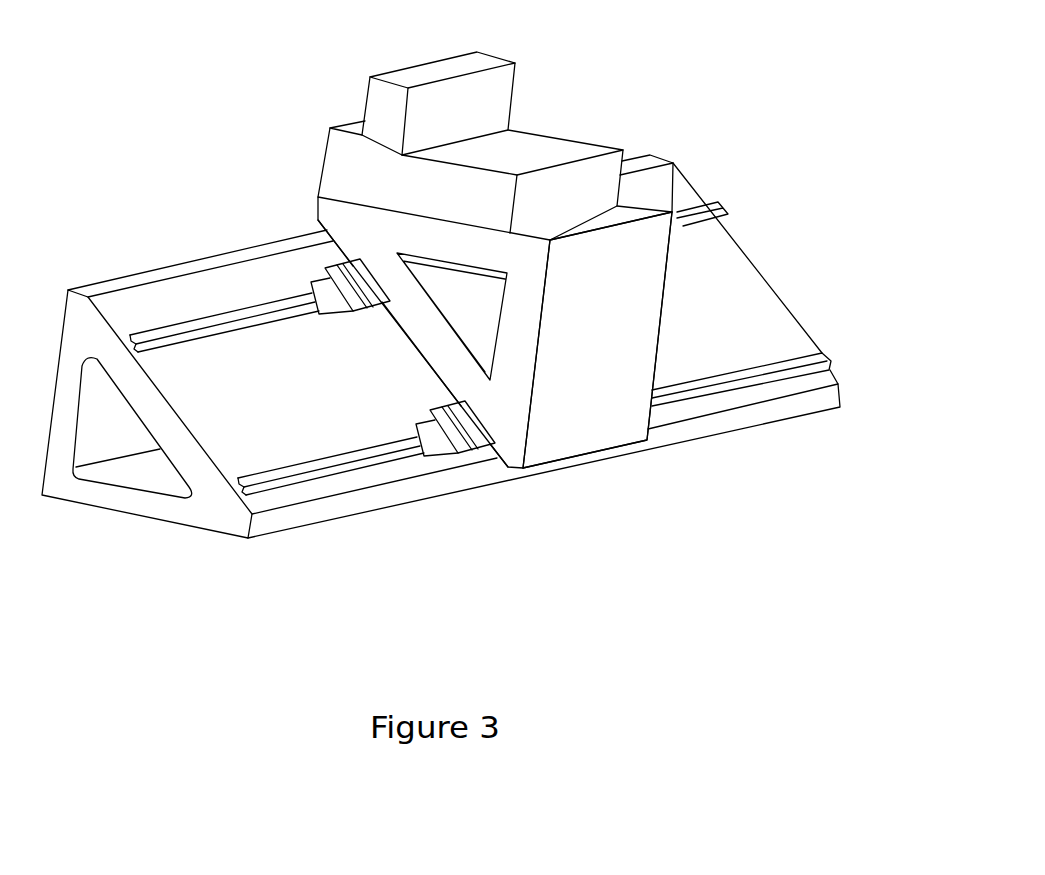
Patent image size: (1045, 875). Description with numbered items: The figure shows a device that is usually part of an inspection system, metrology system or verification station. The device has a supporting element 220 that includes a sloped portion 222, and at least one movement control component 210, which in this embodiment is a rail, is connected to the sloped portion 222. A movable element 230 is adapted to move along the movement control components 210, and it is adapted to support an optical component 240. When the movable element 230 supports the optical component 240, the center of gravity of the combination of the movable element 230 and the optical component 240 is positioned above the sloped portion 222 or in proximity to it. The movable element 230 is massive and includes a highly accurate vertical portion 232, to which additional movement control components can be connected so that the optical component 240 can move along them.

The movement control component 210 is at (212, 320).
The supporting element 220 is at (110, 435).
The sloped portion 222 is at (235, 415).
The movable element 230 is at (508, 418).
The vertical portion 232 is at (597, 340).
The optical component 240 is at (487, 102).